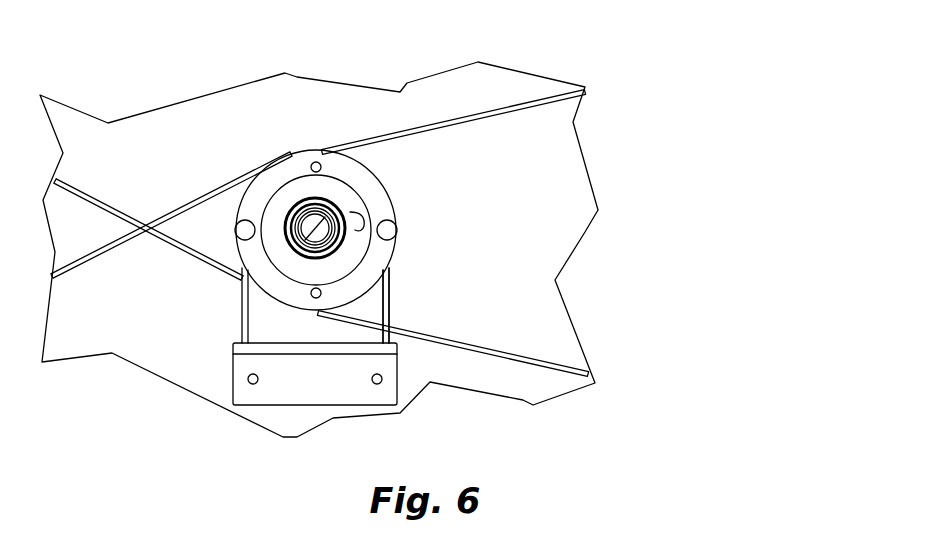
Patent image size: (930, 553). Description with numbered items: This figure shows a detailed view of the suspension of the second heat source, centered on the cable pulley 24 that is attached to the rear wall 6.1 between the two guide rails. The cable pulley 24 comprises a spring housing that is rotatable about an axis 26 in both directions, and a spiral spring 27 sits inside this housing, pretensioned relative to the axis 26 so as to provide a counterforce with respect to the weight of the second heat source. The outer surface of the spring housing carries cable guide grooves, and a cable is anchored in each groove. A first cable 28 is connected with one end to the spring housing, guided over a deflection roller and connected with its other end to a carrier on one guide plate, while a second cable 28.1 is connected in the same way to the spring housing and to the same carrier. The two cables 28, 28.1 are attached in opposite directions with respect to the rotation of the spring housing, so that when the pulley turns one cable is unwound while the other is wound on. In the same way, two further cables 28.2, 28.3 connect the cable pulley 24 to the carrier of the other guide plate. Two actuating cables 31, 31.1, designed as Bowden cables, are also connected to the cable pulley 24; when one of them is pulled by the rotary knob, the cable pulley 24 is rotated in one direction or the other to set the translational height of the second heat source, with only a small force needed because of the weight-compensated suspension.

The rear wall 6.1 is at (508, 195).
The cable pulley 24 is at (308, 134).
The axis 26 is at (289, 228).
The spiral spring 27 is at (293, 198).
The first cable 28 is at (103, 198).
The second cable 28.1 is at (79, 266).
The cable 28.2 is at (473, 113).
The cable 28.3 is at (514, 357).
The actuating cable 31 is at (239, 311).
The actuating cable 31.1 is at (391, 295).